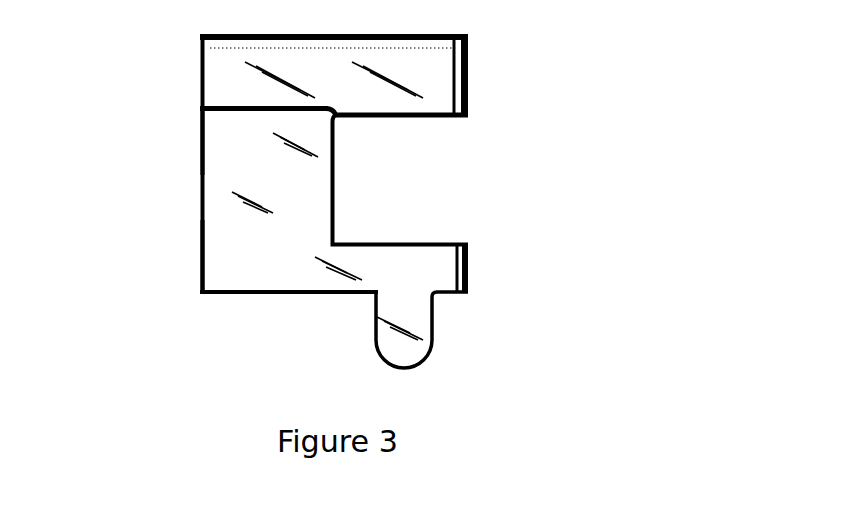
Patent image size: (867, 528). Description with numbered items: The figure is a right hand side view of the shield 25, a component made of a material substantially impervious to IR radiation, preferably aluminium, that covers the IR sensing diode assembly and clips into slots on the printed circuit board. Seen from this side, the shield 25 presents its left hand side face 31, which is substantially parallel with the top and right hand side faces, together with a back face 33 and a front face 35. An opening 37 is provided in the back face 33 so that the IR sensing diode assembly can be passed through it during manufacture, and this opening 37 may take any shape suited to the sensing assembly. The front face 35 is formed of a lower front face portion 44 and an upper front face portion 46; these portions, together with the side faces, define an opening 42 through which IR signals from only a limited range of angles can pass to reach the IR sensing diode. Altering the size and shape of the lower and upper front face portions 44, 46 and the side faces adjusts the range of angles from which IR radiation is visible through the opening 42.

The shield 25 is at (670, 54).
The upper front face portion 46 is at (470, 64).
The opening 37 is at (203, 145).
The left hand side face 31 is at (255, 195).
The back face 33 is at (203, 247).
The opening 42 is at (425, 195).
The front face 35 is at (468, 267).
The lower front face portion 44 is at (468, 290).